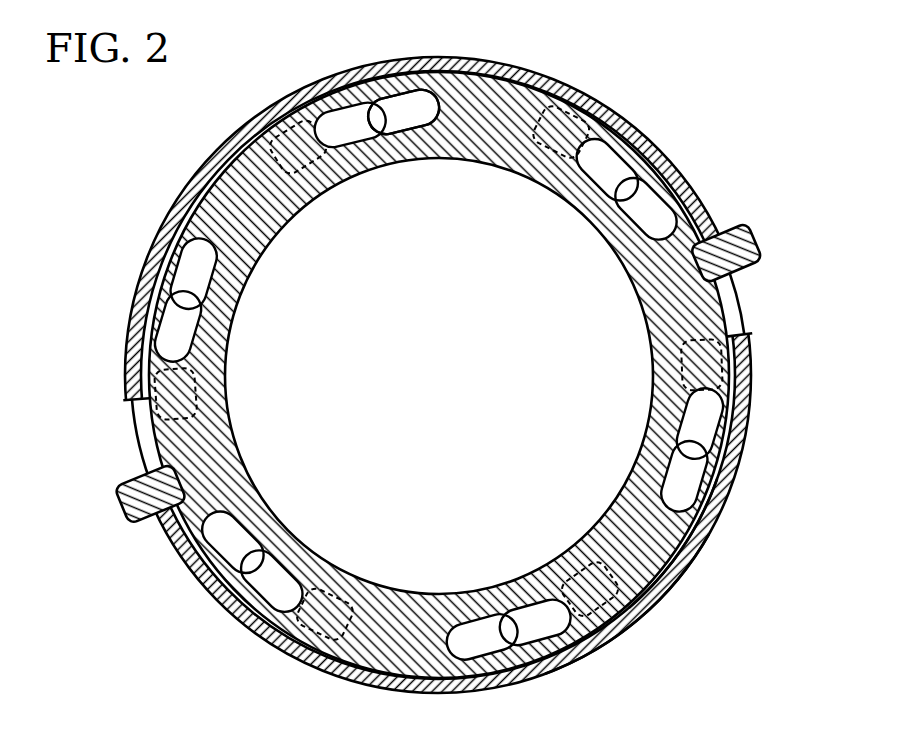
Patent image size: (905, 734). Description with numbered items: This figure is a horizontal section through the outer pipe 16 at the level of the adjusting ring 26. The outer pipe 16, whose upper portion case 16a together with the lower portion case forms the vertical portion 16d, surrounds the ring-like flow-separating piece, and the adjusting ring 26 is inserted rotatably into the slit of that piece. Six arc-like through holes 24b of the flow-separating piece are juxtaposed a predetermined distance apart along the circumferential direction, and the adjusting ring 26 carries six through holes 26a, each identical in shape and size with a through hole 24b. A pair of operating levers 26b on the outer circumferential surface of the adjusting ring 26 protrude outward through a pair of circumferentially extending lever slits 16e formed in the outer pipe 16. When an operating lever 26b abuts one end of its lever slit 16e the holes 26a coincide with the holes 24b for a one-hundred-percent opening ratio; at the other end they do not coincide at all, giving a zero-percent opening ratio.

The outer pipe 16 is at (733, 500).
The upper portion case 16a is at (662, 606).
The vertical portion 16d is at (705, 547).
The lever slit 16e is at (752, 322).
The through hole 24b is at (347, 130).
The adjusting ring 26 is at (372, 589).
The through hole 26a is at (412, 132).
The operating lever 26b is at (752, 243).